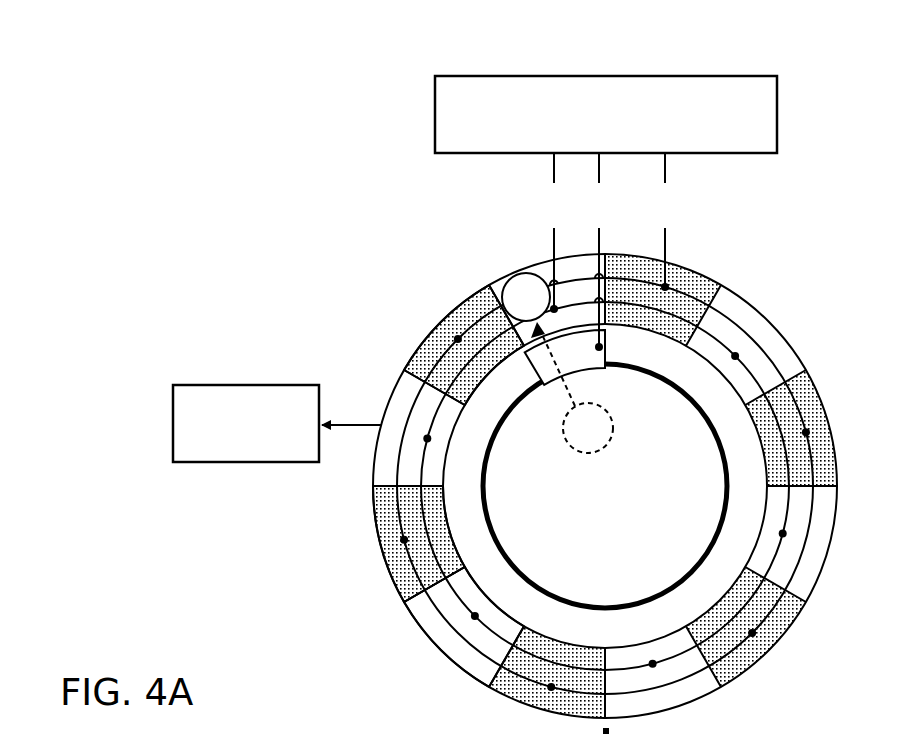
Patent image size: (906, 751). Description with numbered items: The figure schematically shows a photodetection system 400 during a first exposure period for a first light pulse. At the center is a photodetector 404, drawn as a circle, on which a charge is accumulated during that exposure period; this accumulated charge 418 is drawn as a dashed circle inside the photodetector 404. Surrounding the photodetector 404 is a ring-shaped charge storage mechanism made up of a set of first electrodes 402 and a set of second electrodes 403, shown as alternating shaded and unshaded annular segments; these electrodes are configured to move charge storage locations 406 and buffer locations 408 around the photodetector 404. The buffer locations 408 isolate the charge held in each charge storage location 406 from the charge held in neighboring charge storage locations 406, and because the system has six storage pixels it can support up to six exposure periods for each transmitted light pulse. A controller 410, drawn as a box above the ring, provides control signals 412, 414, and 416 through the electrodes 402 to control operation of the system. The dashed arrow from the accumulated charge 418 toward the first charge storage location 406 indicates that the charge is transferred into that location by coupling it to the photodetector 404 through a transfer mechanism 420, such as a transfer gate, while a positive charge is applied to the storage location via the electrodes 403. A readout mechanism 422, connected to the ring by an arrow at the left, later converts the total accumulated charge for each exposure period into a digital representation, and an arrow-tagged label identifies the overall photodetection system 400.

The photodetection system 400 is at (252, 50).
The first electrodes 402 is at (405, 548).
The second electrodes 403 is at (475, 620).
The photodetector 404 is at (621, 496).
The charge storage location 406 is at (501, 288).
The buffer location 408 is at (421, 361).
The controller 410 is at (764, 148).
The control signal 412 is at (666, 222).
The control signal 414 is at (555, 233).
The control signal 416 is at (601, 252).
The transferred charge Q1A 418 is at (604, 410).
The transfer mechanism 420 is at (587, 363).
The readout mechanism 422 is at (308, 458).